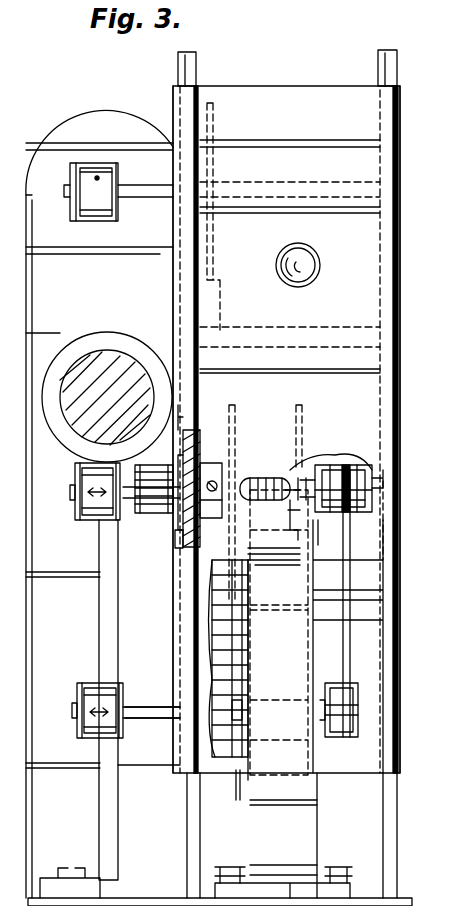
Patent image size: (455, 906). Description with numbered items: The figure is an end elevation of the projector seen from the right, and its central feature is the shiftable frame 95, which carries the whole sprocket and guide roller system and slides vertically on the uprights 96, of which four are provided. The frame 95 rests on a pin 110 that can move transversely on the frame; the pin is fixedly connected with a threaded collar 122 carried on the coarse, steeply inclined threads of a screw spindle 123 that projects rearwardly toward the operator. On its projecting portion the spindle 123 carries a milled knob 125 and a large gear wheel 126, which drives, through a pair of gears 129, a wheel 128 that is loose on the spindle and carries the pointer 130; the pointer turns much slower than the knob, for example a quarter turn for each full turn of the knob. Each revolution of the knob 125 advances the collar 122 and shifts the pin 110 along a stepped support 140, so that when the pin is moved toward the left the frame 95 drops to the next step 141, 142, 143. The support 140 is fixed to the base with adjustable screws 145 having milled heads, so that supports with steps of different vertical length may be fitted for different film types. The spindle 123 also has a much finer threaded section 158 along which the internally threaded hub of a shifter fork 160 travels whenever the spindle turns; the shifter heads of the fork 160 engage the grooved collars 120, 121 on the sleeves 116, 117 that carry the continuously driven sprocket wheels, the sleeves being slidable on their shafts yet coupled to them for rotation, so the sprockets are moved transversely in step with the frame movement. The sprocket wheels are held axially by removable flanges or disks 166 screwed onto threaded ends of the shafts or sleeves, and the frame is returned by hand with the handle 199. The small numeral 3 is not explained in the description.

The shiftable frame 95 is at (274, 87).
The uprights 96 is at (196, 72).
The handle 199 is at (320, 270).
The pointer 130 is at (178, 417).
The large gear wheel 126 is at (208, 478).
The threaded collar 122 is at (302, 470).
The grooved collar 120 is at (338, 465).
The pin 110 is at (312, 480).
The threaded section 158 is at (383, 474).
The screw spindle 123 is at (400, 488).
The shifter fork 160 is at (352, 535).
The removable flanges or disks 166 is at (72, 522).
The milled knob 125 is at (136, 514).
The wheel 128 is at (183, 532).
The sleeve 116 is at (128, 530).
The pair of gears 129 is at (182, 556).
The step 141 is at (270, 502).
The step 142 is at (292, 508).
The element 3 is at (326, 532).
The stepped support 140 is at (306, 590).
The step 143 is at (250, 563).
The sleeve 117 is at (154, 722).
The grooved collar 121 is at (340, 740).
The adjustable screws 145 is at (338, 870).